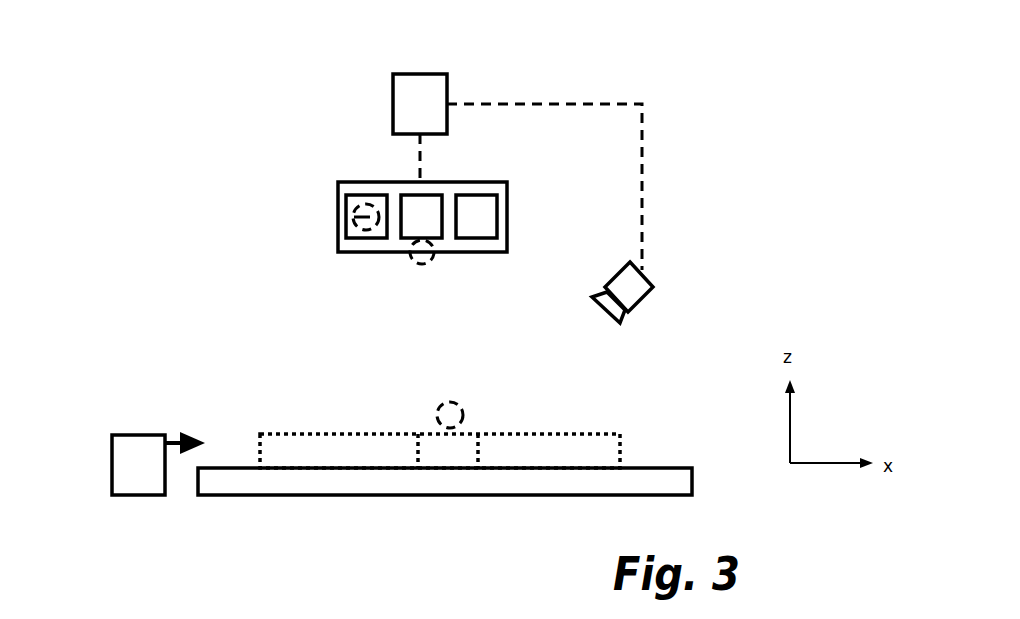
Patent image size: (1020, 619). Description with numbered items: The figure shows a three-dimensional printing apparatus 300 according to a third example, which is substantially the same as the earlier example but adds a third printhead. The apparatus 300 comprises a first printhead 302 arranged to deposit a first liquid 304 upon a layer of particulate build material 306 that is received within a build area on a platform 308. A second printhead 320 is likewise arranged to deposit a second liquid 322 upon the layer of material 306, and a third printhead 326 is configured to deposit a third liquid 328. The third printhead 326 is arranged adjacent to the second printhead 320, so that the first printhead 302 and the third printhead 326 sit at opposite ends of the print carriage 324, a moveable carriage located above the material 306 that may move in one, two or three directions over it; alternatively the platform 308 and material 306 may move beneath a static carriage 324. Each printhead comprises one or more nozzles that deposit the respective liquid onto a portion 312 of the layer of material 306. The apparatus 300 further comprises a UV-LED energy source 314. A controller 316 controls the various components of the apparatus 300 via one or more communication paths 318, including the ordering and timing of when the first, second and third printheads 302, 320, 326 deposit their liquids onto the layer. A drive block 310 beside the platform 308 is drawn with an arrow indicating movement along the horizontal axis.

The three-dimensional printing apparatus 300 is at (736, 79).
The first printhead 302 is at (497, 208).
The first liquid 304 is at (455, 402).
The layer of particulate build material 306 is at (613, 432).
The platform 308 is at (317, 495).
The drive unit 310 is at (110, 472).
The portion of the layer of particulate material 312 is at (468, 433).
The UV-LED energy source 314 is at (653, 287).
The controller 316 is at (438, 74).
The communication paths 318 is at (577, 104).
The second printhead 320 is at (430, 213).
The second liquid 322 is at (432, 262).
The print carriage 324 is at (365, 252).
The third printhead 326 is at (350, 229).
The third liquid 328 is at (347, 210).